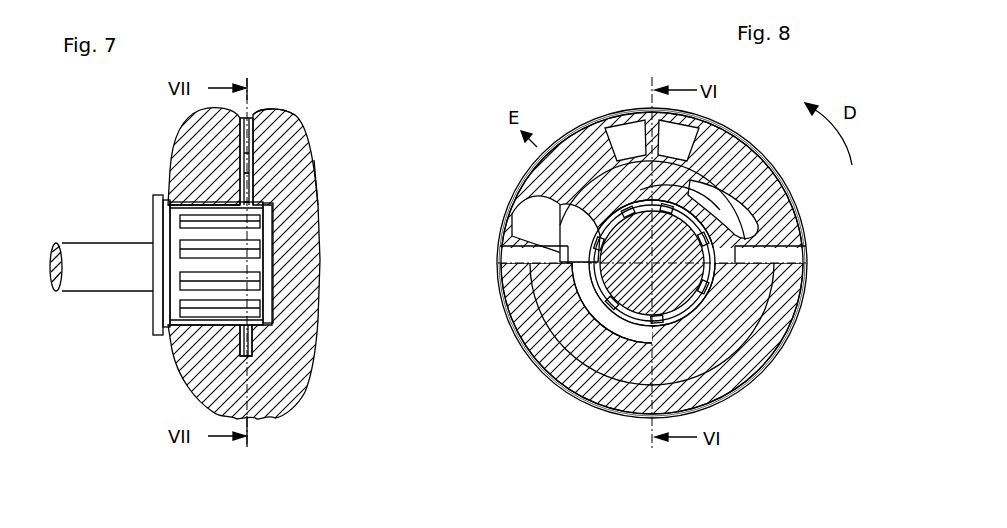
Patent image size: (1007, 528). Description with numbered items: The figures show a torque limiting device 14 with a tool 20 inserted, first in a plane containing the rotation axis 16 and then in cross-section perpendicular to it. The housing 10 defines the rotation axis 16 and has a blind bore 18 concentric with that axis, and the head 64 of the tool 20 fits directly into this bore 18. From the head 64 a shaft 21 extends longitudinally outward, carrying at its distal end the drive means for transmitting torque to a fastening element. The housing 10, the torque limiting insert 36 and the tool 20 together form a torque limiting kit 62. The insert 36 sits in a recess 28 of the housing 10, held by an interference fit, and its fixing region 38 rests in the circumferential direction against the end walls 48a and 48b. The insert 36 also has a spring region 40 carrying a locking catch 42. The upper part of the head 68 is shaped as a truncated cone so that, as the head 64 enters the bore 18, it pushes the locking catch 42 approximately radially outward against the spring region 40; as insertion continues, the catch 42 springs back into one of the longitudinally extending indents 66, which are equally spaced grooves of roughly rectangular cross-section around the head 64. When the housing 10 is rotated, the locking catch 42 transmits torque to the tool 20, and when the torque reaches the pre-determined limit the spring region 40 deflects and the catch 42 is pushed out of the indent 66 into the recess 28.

In FIG. 7, the housing 10 is at (280, 113).
In FIG. 8, the housing 10 is at (592, 404).
In FIG. 7, the torque limiting device 14 is at (312, 160).
In FIG. 8, the torque limiting device 14 is at (613, 424).
In FIG. 8, the rotation axis 16 is at (680, 287).
In FIG. 7, the blind bore 18 is at (277, 235).
In FIG. 8, the blind bore 18 is at (697, 347).
In FIG. 7, the tool 20 is at (157, 322).
In FIG. 8, the tool 20 is at (703, 297).
In FIG. 7, the shaft 21 is at (63, 243).
In FIG. 7, the recess 28 is at (249, 110).
In FIG. 7, the torque limiting insert 36 is at (258, 135).
In FIG. 8, the torque limiting insert 36 is at (555, 378).
In FIG. 8, the fixing region 38 is at (520, 217).
In FIG. 7, the spring region 40 is at (258, 180).
In FIG. 8, the spring region 40 is at (673, 187).
In FIG. 7, the locking catch 42 is at (258, 200).
In FIG. 8, the locking catch 42 is at (583, 198).
In FIG. 8, the end wall 48a is at (810, 233).
In FIG. 8, the end wall 48b is at (500, 252).
In FIG. 7, the torque limiting kit 62 is at (150, 130).
In FIG. 7, the head 64 is at (310, 361).
In FIG. 7, the indents 66 is at (187, 310).
In FIG. 7, the upper part of the head 68 is at (233, 294).